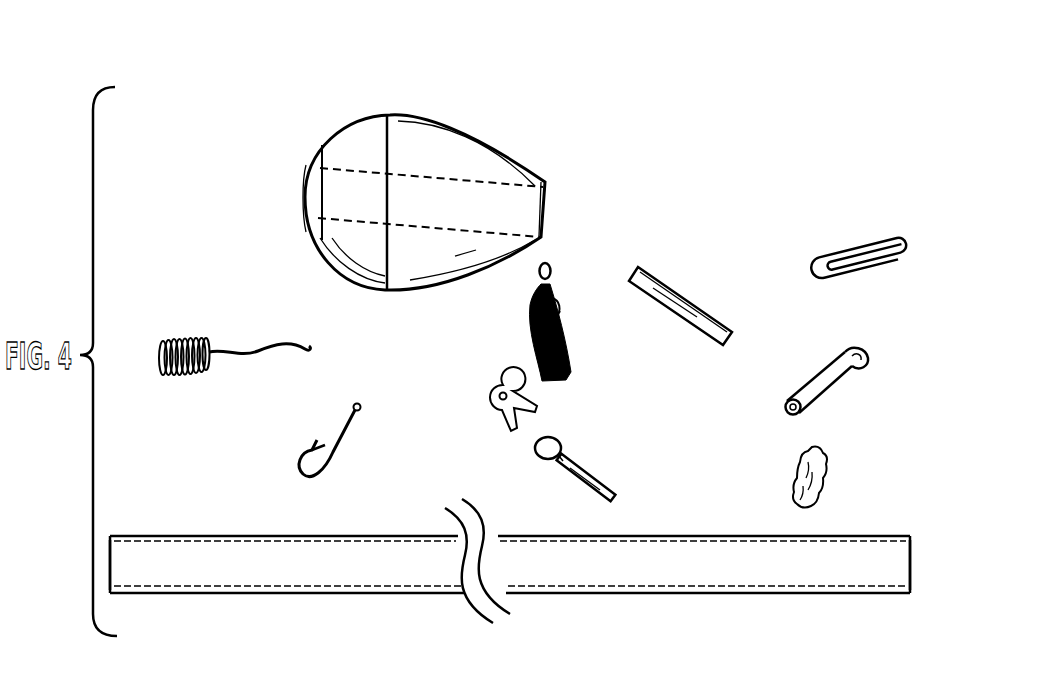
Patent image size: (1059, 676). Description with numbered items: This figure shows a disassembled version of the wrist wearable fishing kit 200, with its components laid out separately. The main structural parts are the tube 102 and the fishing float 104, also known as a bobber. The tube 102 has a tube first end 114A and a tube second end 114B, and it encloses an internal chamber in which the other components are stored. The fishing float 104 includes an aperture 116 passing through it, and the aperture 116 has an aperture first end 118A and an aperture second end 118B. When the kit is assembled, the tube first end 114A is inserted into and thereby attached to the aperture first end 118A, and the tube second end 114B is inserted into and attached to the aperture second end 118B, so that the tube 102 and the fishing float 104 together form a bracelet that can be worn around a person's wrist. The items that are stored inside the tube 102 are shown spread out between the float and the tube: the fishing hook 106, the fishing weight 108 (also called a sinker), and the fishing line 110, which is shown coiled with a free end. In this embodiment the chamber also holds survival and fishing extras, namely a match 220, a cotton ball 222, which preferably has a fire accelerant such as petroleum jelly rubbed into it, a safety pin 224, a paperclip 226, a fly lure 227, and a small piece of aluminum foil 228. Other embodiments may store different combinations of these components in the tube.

The wrist wearable fishing kit 200 is at (776, 95).
The fishing float 104 is at (468, 150).
The aperture 116 is at (424, 190).
The aperture first end 118A is at (306, 196).
The aperture second end 118B is at (546, 212).
The fishing line 110 is at (195, 340).
The fishing hook 106 is at (345, 418).
The fishing weight 108 is at (500, 386).
The fly lure 227 is at (560, 312).
The small piece of aluminum foil 228 is at (672, 292).
The paperclip 226 is at (870, 250).
The safety pin 224 is at (812, 378).
The cotton ball 222 is at (793, 478).
The match 220 is at (562, 444).
The tube 102 is at (186, 536).
The tube first end 114A is at (108, 552).
The tube second end 114B is at (911, 524).